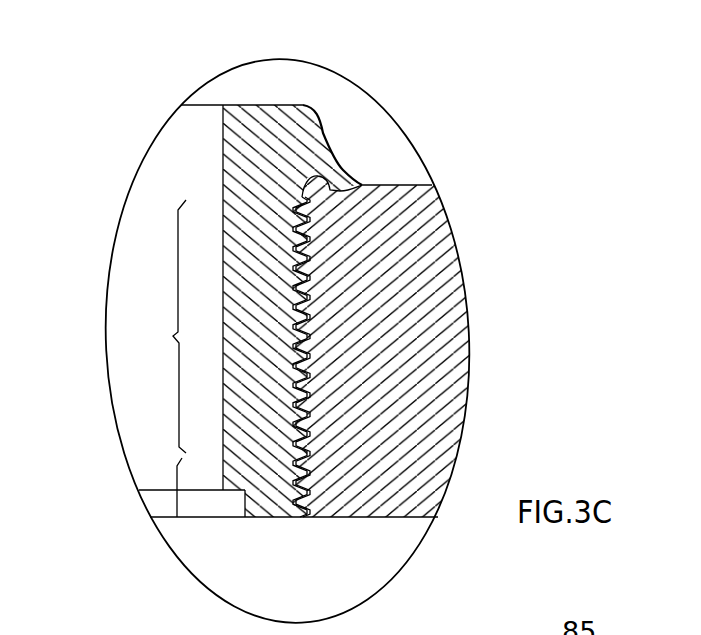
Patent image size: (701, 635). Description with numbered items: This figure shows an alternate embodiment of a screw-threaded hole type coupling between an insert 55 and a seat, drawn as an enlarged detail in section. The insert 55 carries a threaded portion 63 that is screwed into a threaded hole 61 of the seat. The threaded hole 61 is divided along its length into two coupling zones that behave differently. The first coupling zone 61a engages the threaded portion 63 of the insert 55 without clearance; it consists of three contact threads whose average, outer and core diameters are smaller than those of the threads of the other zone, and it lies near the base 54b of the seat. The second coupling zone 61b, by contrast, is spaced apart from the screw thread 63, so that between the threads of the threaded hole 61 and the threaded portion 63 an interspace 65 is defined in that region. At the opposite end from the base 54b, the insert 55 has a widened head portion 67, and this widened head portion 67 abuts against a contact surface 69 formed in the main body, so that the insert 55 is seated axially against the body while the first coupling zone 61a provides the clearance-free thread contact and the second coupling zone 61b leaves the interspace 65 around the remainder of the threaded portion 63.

The insert 55 is at (171, 71).
The widened head portion 67 is at (315, 140).
The contact surface 69 is at (362, 185).
The interspace 65 is at (307, 242).
The threaded hole 61 is at (302, 260).
The threaded portion 63 is at (300, 390).
The second coupling zone 61b is at (173, 336).
The first coupling zone 61a is at (172, 486).
The base 54b is at (132, 554).